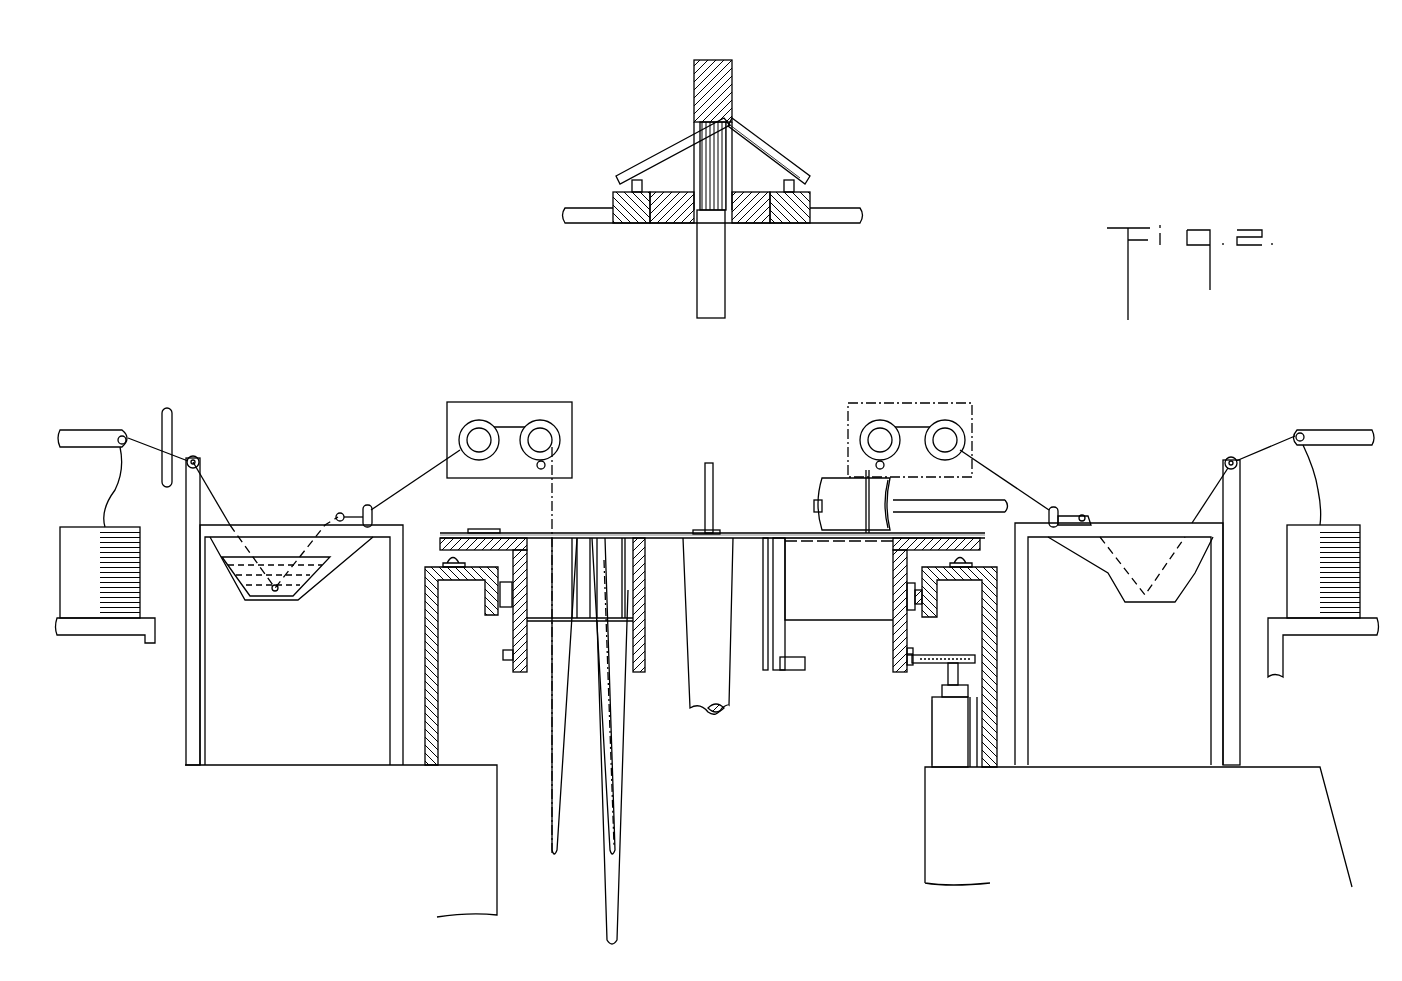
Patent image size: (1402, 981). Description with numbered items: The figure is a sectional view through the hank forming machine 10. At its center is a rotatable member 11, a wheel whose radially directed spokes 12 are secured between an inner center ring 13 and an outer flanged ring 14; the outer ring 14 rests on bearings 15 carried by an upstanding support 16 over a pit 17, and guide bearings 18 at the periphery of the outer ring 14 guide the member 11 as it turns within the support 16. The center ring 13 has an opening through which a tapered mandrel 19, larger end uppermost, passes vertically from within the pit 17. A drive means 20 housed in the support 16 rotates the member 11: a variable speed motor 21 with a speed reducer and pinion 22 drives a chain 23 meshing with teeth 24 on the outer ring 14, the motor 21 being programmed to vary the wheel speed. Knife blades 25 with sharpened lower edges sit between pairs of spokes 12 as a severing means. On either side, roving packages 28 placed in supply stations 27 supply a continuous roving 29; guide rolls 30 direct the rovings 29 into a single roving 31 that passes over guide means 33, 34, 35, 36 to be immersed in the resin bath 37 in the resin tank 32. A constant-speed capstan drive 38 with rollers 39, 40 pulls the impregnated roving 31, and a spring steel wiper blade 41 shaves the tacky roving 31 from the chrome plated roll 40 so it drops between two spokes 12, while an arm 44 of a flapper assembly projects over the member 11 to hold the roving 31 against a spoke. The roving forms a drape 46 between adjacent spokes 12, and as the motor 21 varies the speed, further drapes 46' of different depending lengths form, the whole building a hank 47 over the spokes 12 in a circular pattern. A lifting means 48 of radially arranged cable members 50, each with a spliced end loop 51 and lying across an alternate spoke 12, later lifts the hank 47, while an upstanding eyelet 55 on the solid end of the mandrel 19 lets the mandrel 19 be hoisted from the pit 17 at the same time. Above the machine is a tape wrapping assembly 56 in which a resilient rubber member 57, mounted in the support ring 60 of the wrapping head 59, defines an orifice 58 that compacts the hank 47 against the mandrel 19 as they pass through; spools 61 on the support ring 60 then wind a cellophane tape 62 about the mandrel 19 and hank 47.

The hank forming machine 10 is at (819, 412).
The rotatable member 11 is at (800, 540).
The spokes 12 is at (853, 548).
The inner center ring 13 is at (641, 672).
The outer flanged ring 14 is at (895, 650).
The bearings 15 is at (452, 557).
The upstanding support 16 is at (995, 655).
The pit 17 is at (925, 786).
The guide bearings 18 is at (905, 600).
The tapered mandrel 19 is at (695, 693).
The drive means 20 is at (918, 732).
The variable speed motor 21 is at (932, 750).
The speed reducer and pinion 22 is at (948, 672).
The drive chain 23 is at (948, 655).
The teeth 24 is at (505, 660).
The knife blades 25 is at (797, 672).
The supply stations 27 is at (123, 412).
The roving packages 28 is at (77, 527).
The roving 29 is at (112, 487).
The guide rolls 30 is at (173, 416).
The combined roving 31 is at (230, 500).
The resin tank 32 is at (296, 525).
The guide means 33 is at (201, 462).
The guide means 34 is at (275, 592).
The guide means 35 is at (340, 512).
The guide means 36 is at (368, 505).
The resin bath 37 is at (268, 547).
The capstan drive 38 is at (455, 400).
The roller 39 is at (484, 430).
The capstan roll 40 is at (538, 428).
The spring steel wiper blade 41 is at (550, 470).
The arm 44 is at (975, 501).
The drape 46 is at (618, 715).
The additional drape 46' is at (639, 767).
The hank 47 is at (540, 723).
The lifting means 48 is at (697, 524).
The cable members 50 is at (577, 533).
The spliced end loop 51 is at (483, 532).
The eyelet 55 is at (714, 476).
The tape wrapping assembly 56 is at (612, 122).
The deformable member 57 is at (676, 225).
The orifice 58 is at (726, 222).
The wrapping head 59 is at (820, 167).
The support ring 60 is at (622, 225).
The spools 61 is at (630, 185).
The cellophane tape 62 is at (672, 134).